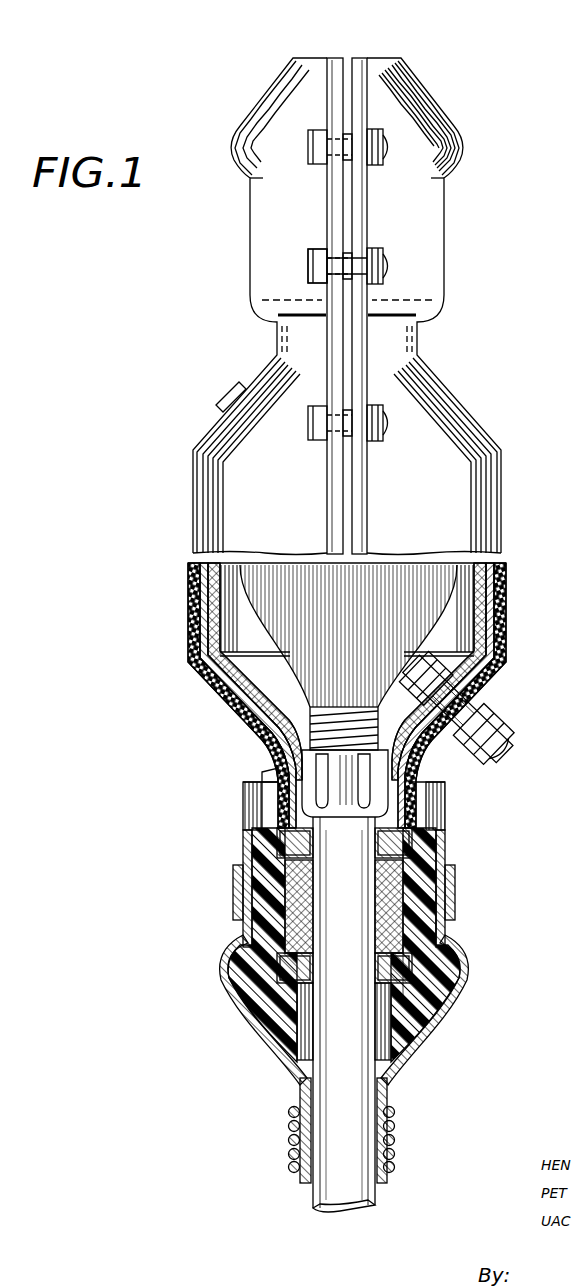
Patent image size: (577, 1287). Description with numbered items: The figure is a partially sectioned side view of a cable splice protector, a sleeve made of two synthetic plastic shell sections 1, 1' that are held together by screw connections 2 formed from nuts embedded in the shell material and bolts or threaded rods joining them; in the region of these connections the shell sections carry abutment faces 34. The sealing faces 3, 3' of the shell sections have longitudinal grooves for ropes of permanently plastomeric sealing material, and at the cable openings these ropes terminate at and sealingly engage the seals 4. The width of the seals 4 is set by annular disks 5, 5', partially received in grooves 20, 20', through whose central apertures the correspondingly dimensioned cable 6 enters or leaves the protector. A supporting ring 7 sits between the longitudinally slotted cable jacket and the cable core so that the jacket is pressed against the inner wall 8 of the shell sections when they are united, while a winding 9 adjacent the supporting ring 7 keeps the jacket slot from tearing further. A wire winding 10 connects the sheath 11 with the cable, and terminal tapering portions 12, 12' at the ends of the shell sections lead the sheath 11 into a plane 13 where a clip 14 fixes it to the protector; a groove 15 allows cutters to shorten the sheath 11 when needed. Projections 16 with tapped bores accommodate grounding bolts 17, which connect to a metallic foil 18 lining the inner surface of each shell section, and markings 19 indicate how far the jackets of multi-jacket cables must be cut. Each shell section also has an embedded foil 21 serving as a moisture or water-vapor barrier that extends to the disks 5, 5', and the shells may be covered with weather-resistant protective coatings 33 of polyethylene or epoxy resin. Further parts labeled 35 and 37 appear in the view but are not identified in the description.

The shell section 1 is at (248, 443).
The shell section 1' is at (446, 443).
The screw connection 2 is at (308, 265).
The sealing face 3 is at (318, 280).
The sealing face 3' is at (380, 279).
The seal 4 is at (286, 920).
The disk 5 is at (298, 971).
The disk 5' is at (303, 840).
The cable 6 is at (314, 1198).
The supporting ring 7 is at (368, 786).
The inner wall 8 is at (256, 801).
The winding 9 is at (312, 718).
The wire winding 10 is at (396, 1128).
The sheath 11 is at (300, 1100).
The terminal tapering portion 12 is at (255, 972).
The shell half 12' is at (440, 972).
The plane 13 is at (452, 851).
The clip 14 is at (234, 882).
The groove 15 is at (264, 773).
The projection 16 is at (226, 403).
The grounding bolt 17 is at (507, 748).
The metallic foil 18 is at (197, 594).
The markings 19 is at (457, 896).
The groove 20 is at (463, 976).
The groove 20' is at (459, 831).
The foil 21 is at (200, 674).
The protective coating 33 is at (192, 628).
The abutment face 34 is at (348, 252).
The nut 35 is at (322, 250).
The funnel 37 is at (306, 568).